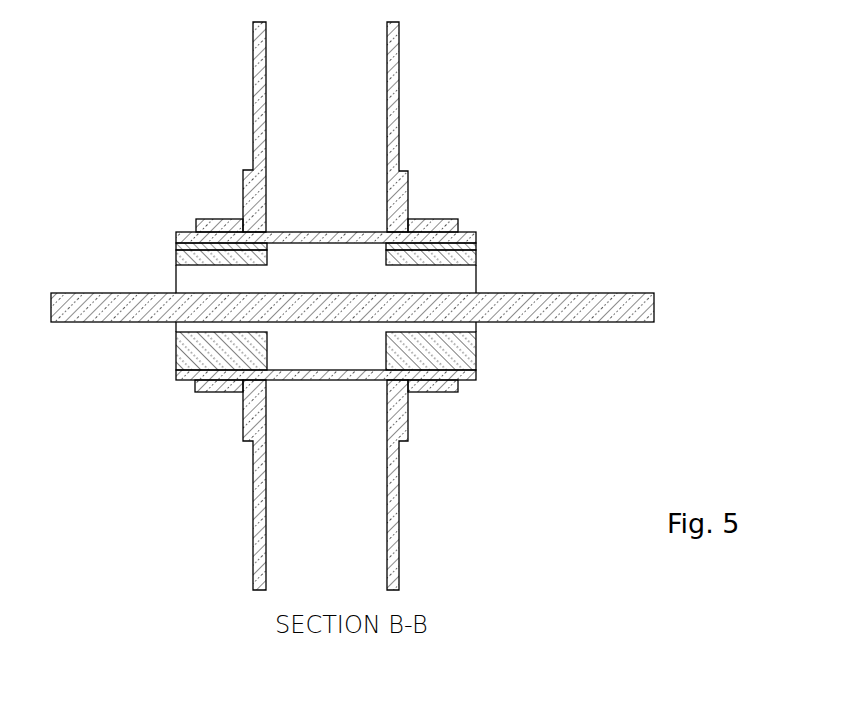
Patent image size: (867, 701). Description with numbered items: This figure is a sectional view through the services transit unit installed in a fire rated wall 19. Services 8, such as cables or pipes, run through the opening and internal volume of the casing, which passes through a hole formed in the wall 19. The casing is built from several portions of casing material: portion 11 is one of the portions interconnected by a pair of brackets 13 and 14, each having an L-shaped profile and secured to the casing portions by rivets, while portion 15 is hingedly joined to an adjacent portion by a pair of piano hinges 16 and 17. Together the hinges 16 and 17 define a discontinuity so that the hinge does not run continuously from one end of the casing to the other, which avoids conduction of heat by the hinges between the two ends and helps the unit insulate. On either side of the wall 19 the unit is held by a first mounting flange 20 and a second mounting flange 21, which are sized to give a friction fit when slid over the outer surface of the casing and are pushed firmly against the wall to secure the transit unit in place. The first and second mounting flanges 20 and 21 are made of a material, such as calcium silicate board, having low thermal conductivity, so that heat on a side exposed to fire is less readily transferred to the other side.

The services 8 is at (95, 300).
The portion of casing material 11 is at (430, 371).
The bracket 13 is at (195, 353).
The bracket 14 is at (473, 363).
The portion of casing material 15 is at (190, 240).
The piano hinge 16 is at (176, 266).
The piano hinge 17 is at (476, 245).
The fire rated wall 19 is at (397, 113).
The first mounting flange 20 is at (228, 387).
The second mounting flange 21 is at (442, 223).